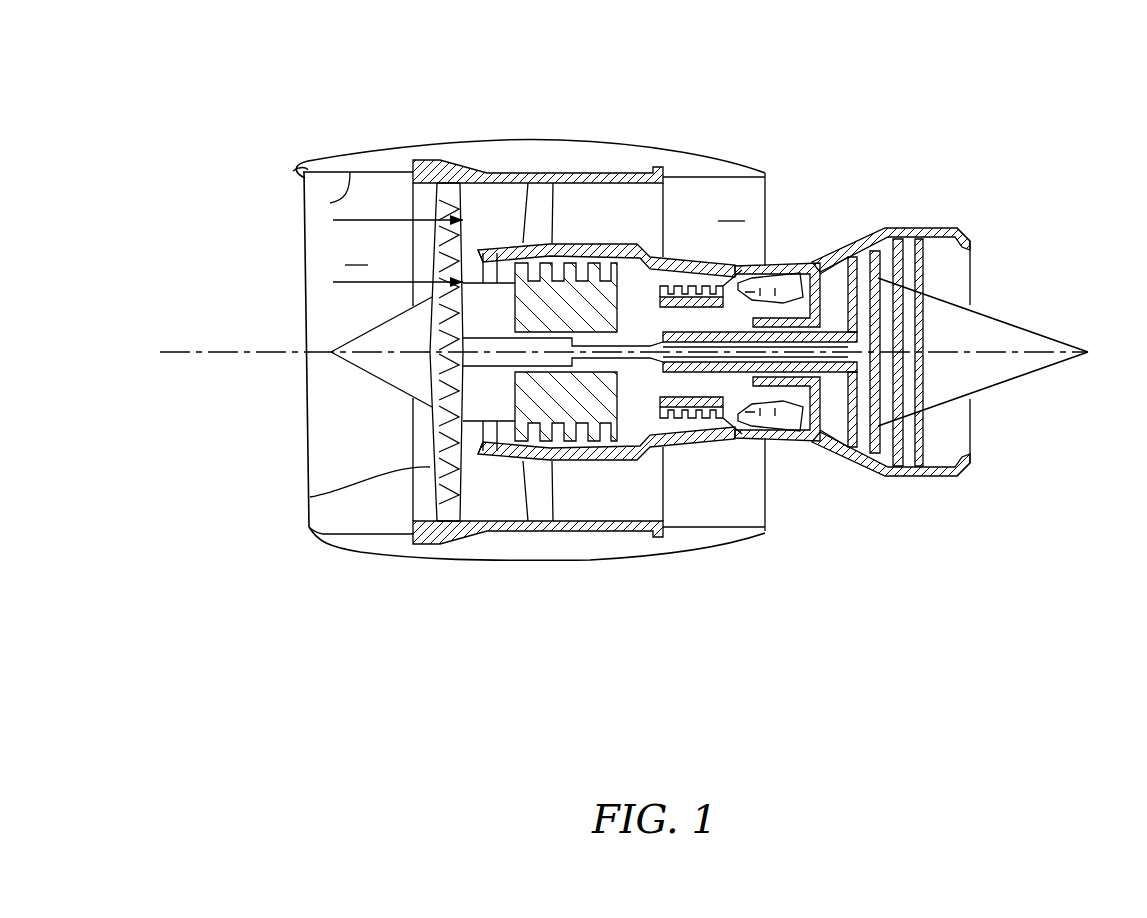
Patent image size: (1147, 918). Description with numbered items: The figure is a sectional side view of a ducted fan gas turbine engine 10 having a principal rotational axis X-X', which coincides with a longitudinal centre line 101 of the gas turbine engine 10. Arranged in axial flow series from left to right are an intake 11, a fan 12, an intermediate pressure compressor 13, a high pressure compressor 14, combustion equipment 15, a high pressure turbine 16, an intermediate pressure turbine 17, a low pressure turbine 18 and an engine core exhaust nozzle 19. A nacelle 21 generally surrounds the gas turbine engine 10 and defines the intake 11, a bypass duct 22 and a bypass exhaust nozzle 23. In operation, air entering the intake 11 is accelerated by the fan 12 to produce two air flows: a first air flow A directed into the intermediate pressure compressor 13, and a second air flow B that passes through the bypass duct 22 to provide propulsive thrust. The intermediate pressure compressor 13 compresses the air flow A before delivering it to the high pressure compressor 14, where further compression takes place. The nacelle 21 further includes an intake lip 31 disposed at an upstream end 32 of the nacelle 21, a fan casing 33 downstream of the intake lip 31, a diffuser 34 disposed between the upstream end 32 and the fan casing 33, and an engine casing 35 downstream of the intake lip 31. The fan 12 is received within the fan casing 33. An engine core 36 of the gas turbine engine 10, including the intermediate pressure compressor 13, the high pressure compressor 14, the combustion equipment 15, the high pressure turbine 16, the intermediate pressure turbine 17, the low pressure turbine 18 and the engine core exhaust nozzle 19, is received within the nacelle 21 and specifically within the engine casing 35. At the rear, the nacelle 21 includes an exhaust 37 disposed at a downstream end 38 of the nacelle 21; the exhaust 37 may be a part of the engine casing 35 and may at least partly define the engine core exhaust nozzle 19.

The gas turbine engine 10 is at (253, 36).
The longitudinal centre line 101 is at (253, 352).
The intake 11 is at (330, 203).
The fan 12 is at (310, 497).
The intermediate pressure compressor 13 is at (563, 463).
The high pressure compressor 14 is at (700, 286).
The combustion equipment 15 is at (757, 420).
The high pressure turbine 16 is at (812, 440).
The intermediate pressure turbine 17 is at (847, 258).
The low pressure turbine 18 is at (870, 468).
The engine core exhaust nozzle 19 is at (966, 242).
The nacelle 21 is at (533, 153).
The bypass duct 22 is at (714, 352).
The bypass exhaust nozzle 23 is at (765, 173).
The intake lip 31 is at (293, 171).
The upstream end 32 is at (287, 158).
The fan casing 33 is at (450, 160).
The diffuser 34 is at (390, 352).
The engine casing 35 is at (605, 243).
The engine core 36 is at (476, 248).
The exhaust 37 is at (970, 265).
The downstream end 38 is at (992, 231).